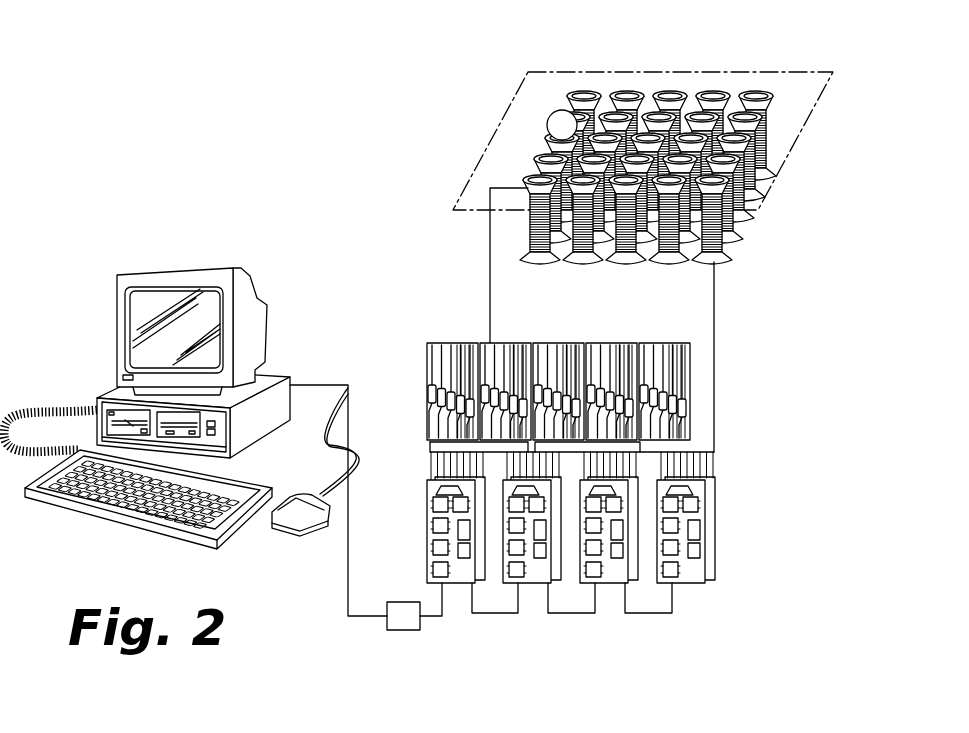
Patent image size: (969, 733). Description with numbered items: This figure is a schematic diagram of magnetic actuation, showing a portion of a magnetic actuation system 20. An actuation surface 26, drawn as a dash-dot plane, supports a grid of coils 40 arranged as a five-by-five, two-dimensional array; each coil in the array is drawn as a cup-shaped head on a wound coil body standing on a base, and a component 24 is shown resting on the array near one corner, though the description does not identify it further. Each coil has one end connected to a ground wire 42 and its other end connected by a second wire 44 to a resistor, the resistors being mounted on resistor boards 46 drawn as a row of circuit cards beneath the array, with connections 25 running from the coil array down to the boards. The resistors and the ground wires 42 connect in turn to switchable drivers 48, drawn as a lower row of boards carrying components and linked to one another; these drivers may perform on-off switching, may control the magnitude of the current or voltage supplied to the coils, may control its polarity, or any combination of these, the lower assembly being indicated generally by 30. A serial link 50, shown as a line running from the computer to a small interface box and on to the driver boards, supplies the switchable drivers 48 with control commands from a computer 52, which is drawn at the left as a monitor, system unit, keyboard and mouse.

The magnetic actuation system 20 is at (156, 142).
The computer 52 is at (245, 242).
The grid of coils 40 is at (758, 256).
The actuation surface 26 is at (785, 82).
The ball 24 is at (549, 117).
The cables 25 is at (498, 272).
The ground wire 42 is at (715, 368).
The second wire 44 is at (489, 306).
The resistor boards 46 is at (427, 373).
The controller assembly 30 is at (711, 604).
The switchable drivers 48 is at (427, 524).
The serial link 50 is at (348, 573).